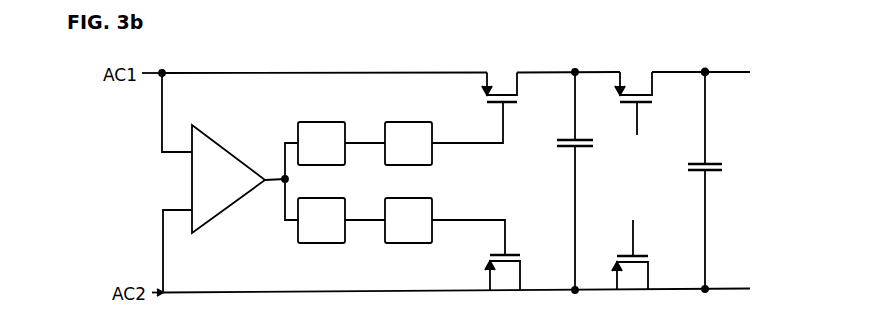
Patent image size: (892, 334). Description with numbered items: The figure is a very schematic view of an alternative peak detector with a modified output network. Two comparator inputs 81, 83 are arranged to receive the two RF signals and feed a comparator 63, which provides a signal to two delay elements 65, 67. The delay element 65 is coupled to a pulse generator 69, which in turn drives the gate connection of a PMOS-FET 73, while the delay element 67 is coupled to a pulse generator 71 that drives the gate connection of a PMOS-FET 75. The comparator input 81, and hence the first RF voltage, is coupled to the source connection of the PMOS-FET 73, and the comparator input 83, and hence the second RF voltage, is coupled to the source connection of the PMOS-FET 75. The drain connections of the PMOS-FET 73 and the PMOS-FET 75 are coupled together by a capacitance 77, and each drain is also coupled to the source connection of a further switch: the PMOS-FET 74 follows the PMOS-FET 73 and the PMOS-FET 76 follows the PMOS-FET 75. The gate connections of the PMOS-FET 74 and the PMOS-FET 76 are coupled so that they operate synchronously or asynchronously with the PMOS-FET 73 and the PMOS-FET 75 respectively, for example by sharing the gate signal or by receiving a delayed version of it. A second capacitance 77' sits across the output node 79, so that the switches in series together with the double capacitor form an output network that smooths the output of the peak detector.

The comparator 63 is at (245, 179).
The delay element 65 is at (341, 143).
The delay element 67 is at (341, 220).
The pulse generator 69 is at (444, 133).
The pulse generator 71 is at (445, 227).
The PMOS-FET 73 is at (499, 76).
The PMOS-FET 74 is at (633, 93).
The PMOS-FET 75 is at (502, 283).
The PMOS-FET 76 is at (630, 265).
The capacitance 77 is at (584, 181).
The capacitance 77' is at (719, 180).
The output node 79 is at (721, 62).
The comparator input 81 is at (177, 112).
The comparator input 83 is at (177, 241).